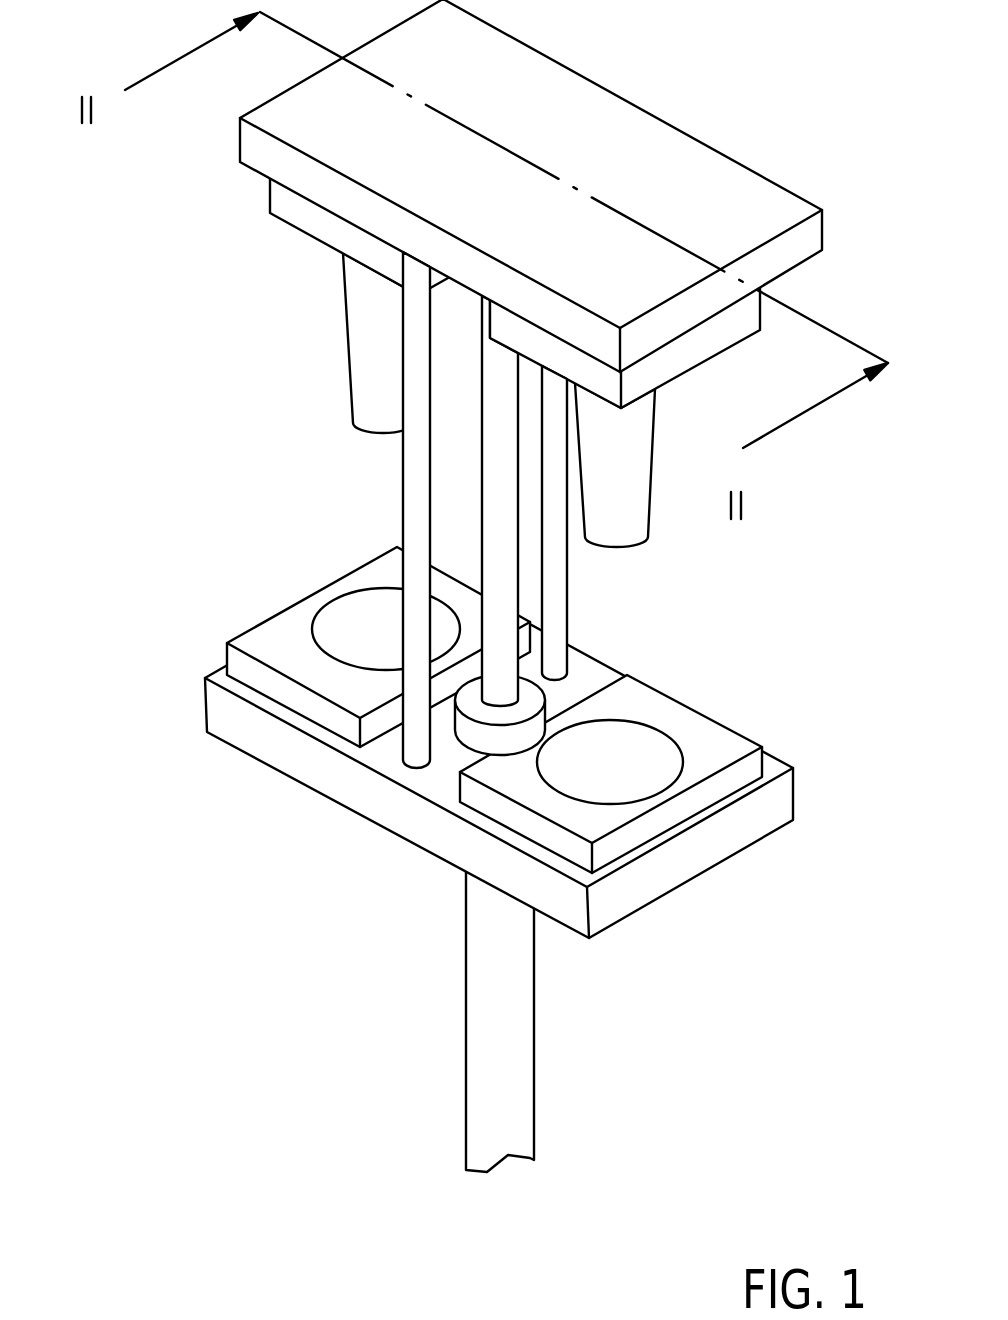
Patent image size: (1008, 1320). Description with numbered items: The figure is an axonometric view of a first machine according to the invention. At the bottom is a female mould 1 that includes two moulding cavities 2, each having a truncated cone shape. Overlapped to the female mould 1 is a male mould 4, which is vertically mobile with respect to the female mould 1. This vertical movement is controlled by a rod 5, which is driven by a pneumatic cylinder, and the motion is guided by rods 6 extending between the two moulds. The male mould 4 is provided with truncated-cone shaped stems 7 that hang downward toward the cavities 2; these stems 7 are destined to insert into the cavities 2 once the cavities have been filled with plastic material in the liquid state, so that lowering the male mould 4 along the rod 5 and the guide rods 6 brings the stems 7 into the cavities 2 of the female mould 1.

The female mould 1 is at (226, 800).
The moulding cavity 2 is at (343, 628).
The male mould 4 is at (222, 213).
The rod 5 is at (500, 562).
The rods 6 is at (410, 503).
The truncated-cone shaped stems 7 is at (378, 338).